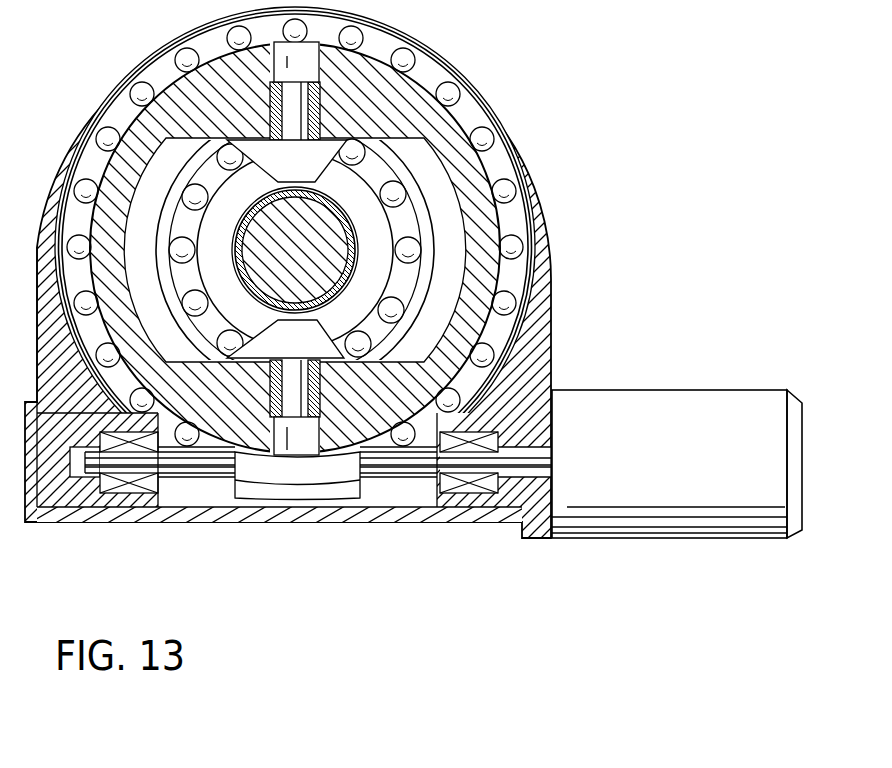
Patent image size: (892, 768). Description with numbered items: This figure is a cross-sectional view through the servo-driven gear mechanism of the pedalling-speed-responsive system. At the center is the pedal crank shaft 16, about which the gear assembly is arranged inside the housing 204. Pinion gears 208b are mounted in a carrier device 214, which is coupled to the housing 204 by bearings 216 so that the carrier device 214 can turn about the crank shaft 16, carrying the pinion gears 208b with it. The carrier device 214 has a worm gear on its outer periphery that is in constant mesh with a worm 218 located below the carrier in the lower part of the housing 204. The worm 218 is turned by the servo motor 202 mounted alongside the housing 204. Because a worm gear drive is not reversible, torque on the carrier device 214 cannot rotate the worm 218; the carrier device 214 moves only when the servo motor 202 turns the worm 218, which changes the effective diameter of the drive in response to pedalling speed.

The pedal crank shaft 16 is at (327, 263).
The servo motor 202 is at (707, 360).
The housing 204 is at (497, 100).
The pinion gears 208b is at (310, 163).
The carrier device 214 is at (398, 90).
The bearings 216 is at (515, 198).
The worm 218 is at (308, 485).